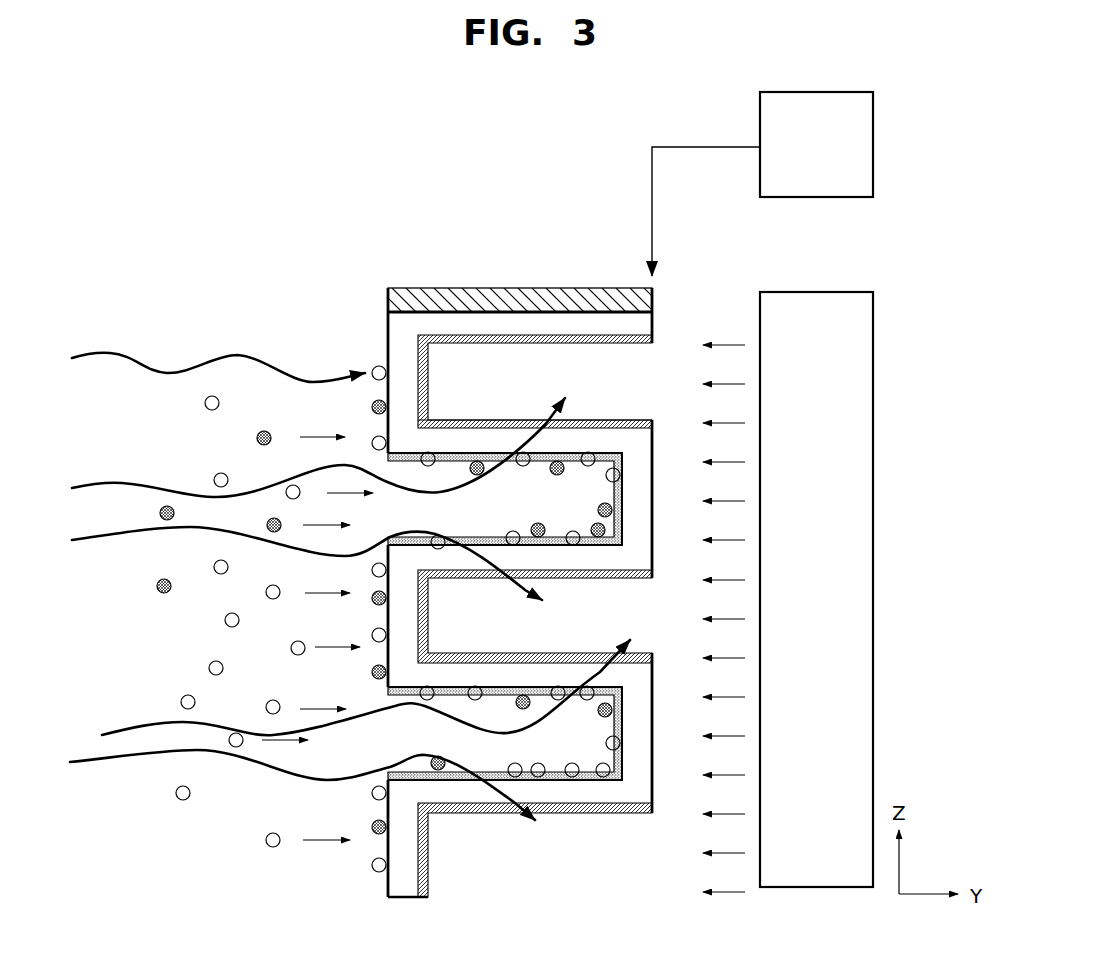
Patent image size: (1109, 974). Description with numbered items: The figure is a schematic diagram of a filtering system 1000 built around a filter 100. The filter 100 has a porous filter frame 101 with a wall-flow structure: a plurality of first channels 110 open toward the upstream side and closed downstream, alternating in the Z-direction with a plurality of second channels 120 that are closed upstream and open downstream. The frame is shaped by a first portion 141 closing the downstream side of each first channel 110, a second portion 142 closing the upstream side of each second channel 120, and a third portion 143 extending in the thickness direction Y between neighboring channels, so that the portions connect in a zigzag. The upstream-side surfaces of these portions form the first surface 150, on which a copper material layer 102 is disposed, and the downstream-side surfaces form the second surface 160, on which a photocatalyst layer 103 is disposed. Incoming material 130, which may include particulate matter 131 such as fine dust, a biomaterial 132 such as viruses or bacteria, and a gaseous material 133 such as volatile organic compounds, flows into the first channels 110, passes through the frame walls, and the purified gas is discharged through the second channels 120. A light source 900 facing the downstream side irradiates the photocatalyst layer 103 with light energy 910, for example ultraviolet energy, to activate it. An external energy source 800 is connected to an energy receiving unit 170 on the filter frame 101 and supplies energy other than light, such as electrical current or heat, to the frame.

The filtering system 1000 is at (276, 162).
The filter 100 is at (350, 312).
The filter frame 101 is at (384, 314).
The copper material layer 102 is at (463, 778).
The photocatalyst layer 103 is at (607, 813).
The first channels 110 is at (506, 516).
The second channels 120 is at (478, 386).
The material 130 is at (197, 423).
The particulate matter 131 is at (215, 473).
The biomaterial 132 is at (165, 505).
The gaseous material 133 is at (95, 483).
The first portion 141 is at (643, 480).
The second portion 142 is at (388, 352).
The third portion 143 is at (585, 440).
The first surface 150 is at (385, 888).
The second surface 160 is at (657, 690).
The energy receiving unit 170 is at (522, 288).
The external energy source 800 is at (875, 147).
The light source 900 is at (814, 293).
The light energy 910 is at (716, 340).